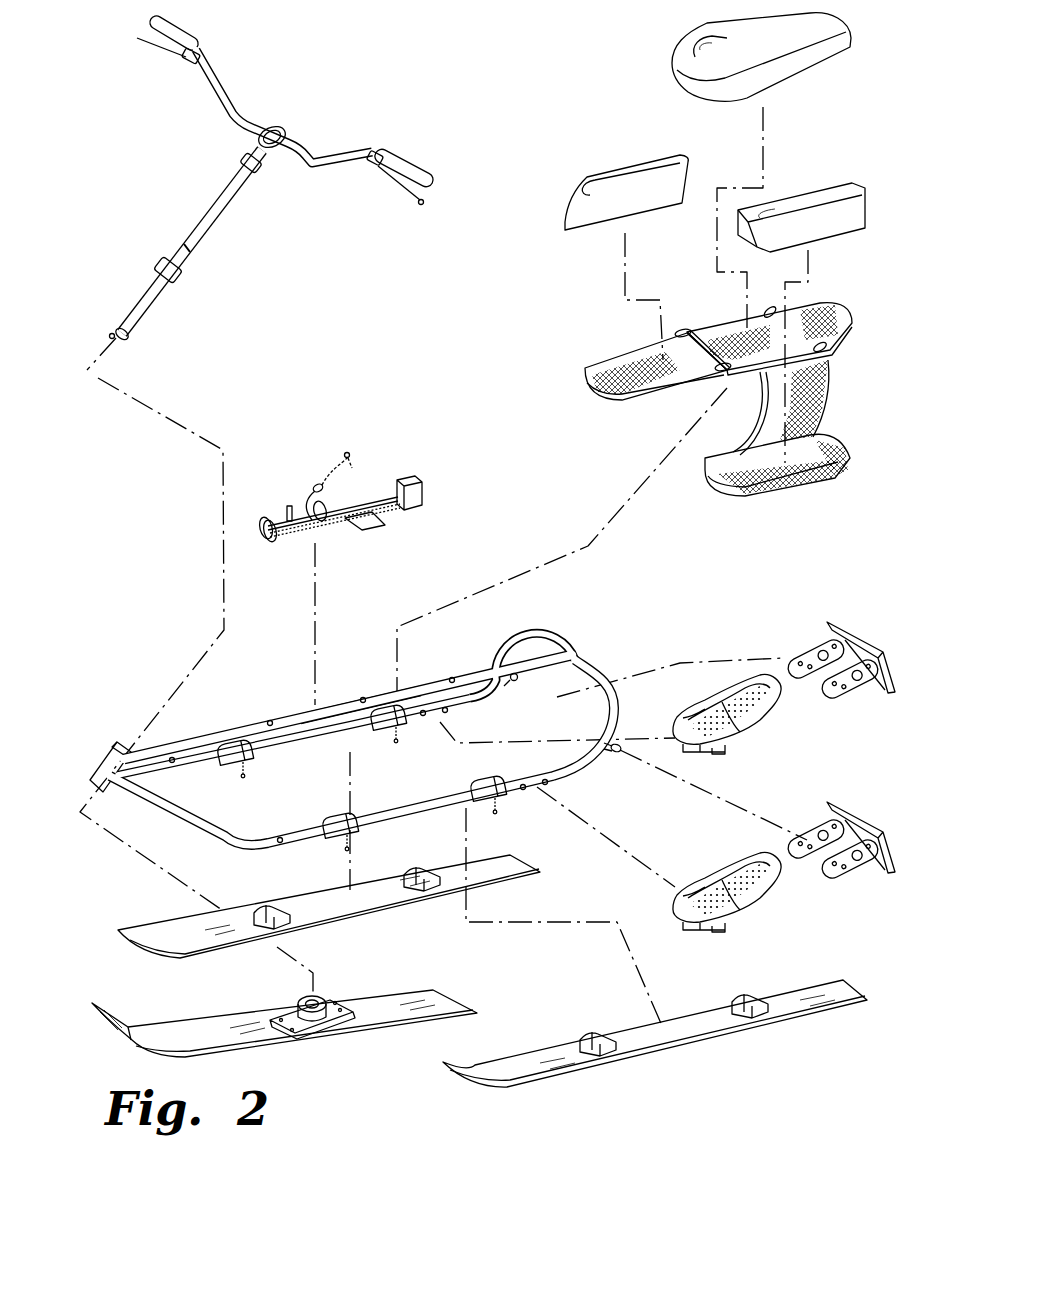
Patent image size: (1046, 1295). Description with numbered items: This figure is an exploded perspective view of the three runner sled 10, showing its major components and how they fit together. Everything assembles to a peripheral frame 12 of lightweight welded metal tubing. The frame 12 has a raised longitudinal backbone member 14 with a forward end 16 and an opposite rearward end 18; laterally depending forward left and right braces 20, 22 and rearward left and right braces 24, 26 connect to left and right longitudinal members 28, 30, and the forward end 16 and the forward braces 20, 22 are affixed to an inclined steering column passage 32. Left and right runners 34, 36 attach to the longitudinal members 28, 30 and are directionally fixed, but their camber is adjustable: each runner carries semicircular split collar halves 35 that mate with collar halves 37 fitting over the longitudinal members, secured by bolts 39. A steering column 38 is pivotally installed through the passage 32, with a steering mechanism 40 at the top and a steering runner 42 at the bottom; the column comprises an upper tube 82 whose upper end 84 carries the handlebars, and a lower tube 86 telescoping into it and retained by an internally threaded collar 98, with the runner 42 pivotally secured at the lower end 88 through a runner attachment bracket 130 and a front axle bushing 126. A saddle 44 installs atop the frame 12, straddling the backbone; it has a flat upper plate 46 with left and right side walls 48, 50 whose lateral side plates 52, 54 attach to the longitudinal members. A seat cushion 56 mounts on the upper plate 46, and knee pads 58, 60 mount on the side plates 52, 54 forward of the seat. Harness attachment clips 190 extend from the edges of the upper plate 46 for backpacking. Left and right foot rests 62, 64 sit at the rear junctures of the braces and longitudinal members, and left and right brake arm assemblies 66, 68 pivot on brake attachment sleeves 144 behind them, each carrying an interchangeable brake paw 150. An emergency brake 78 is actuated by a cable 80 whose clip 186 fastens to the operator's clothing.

The sled 10 is at (496, 80).
The frame 12 is at (578, 648).
The backbone member 14 is at (380, 688).
The forward end 16 is at (165, 730).
The rearward end 18 is at (572, 668).
The forward left brace 20 is at (220, 822).
The forward right brace 22 is at (155, 772).
The rearward left brace 24 is at (612, 678).
The rearward right brace 26 is at (545, 625).
The left longitudinal member 28 is at (385, 824).
The right longitudinal member 30 is at (366, 738).
The steering column passage 32 is at (108, 740).
The left runner 34 is at (718, 1035).
The split collar half 35 is at (400, 866).
The right runner 36 is at (380, 912).
The mating split collar half 37 is at (252, 753).
The steering column 38 is at (177, 195).
The bolt 39 is at (243, 770).
The steering mechanism 40 is at (256, 124).
The steering runner 42 is at (175, 1025).
The saddle 44 is at (615, 405).
The upper plate 46 is at (830, 305).
The left side wall 48 is at (815, 392).
The right side wall 50 is at (708, 372).
The left side plate 52 is at (783, 490).
The right side plate 54 is at (585, 365).
The seat cushion 56 is at (670, 58).
The left knee pad 58 is at (830, 198).
The right knee pad 60 is at (626, 166).
The left foot rest 62 is at (680, 908).
The right foot rest 64 is at (767, 738).
The left brake arm assembly 66 is at (878, 880).
The right brake arm assembly 68 is at (868, 695).
The emergency brake 78 is at (337, 533).
The emergency brake actuation cable 80 is at (315, 483).
The upper tube 82 is at (228, 205).
The upper end 84 is at (258, 172).
The lower tube 86 is at (170, 285).
The lower end 88 is at (126, 333).
The internally threaded collar 98 is at (190, 262).
The front runner axle bushing 126 is at (108, 325).
The runner attachment bracket 130 is at (346, 977).
The brake attachment sleeve 144 is at (513, 683).
The brake paw 150 is at (833, 618).
The clip 186 is at (350, 455).
The harness attachment clip 190 is at (768, 308).